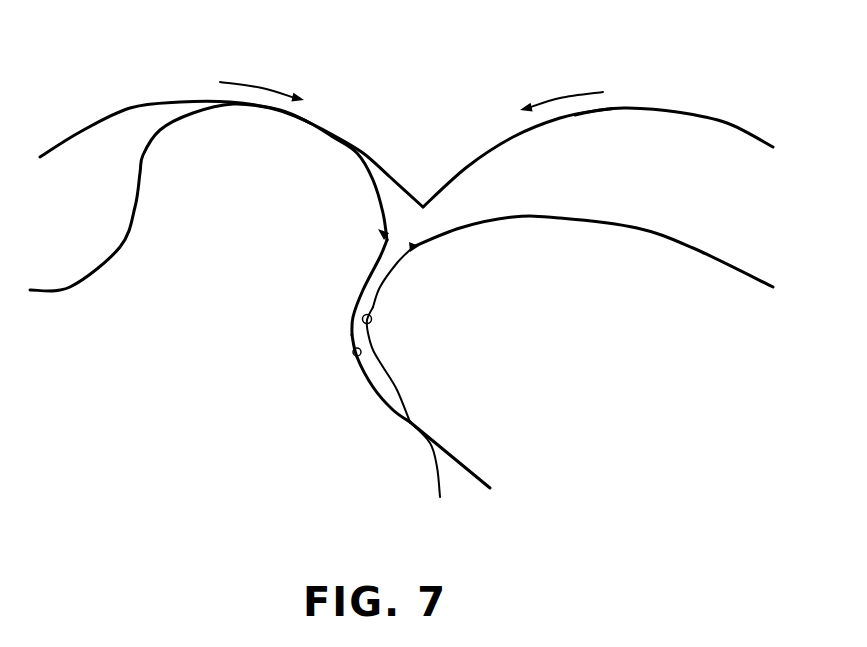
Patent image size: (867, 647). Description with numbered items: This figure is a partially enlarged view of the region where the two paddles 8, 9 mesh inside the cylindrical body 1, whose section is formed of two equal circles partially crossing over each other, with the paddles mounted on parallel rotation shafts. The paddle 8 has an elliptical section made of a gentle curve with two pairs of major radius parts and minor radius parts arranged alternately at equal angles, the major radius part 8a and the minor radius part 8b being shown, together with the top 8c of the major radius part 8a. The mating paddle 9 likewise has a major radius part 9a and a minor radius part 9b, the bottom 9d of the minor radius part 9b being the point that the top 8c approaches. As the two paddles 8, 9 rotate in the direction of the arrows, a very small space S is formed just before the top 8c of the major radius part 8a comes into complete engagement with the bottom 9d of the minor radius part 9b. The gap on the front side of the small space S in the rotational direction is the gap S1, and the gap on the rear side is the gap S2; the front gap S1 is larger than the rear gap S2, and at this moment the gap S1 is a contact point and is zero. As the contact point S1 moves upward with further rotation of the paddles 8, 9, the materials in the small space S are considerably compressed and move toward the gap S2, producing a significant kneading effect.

The cylindrical body 1 is at (600, 110).
The paddle 8 is at (635, 227).
The major radius part 8a is at (392, 298).
The minor radius part 8b is at (703, 272).
The top of the major radius part 8c is at (370, 330).
The paddle 9 is at (145, 153).
The major radius part 9a is at (298, 140).
The minor radius part 9b is at (333, 325).
The bottom of the minor radius part 9d is at (355, 363).
The small space S is at (353, 327).
The gap on the front side S1 is at (417, 422).
The gap on the rear side S2 is at (403, 225).